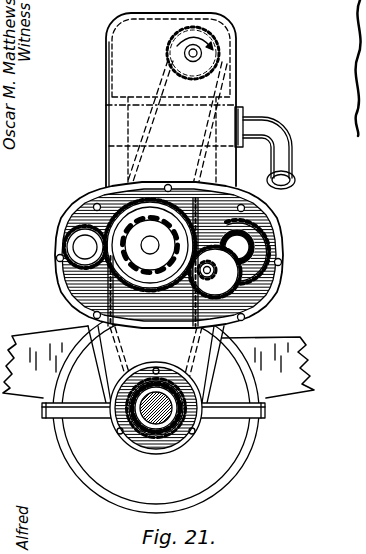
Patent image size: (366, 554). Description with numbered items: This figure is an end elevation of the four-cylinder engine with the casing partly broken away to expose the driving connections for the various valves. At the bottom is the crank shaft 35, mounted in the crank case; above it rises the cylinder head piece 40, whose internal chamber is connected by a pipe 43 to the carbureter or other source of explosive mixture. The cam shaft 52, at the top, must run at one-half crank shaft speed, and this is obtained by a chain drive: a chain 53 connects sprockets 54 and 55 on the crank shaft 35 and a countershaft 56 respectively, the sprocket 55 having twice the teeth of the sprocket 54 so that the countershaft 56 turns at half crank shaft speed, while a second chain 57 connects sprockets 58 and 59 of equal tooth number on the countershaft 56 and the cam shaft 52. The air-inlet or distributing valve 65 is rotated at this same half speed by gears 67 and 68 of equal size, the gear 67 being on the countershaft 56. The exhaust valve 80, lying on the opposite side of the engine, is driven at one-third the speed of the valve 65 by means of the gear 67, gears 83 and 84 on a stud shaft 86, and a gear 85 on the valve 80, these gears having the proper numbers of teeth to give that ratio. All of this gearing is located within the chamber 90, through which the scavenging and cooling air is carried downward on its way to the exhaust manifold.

The crank shaft 35 is at (133, 434).
The cylinder head piece 40 is at (110, 128).
The pipe 43 is at (296, 180).
The cam shaft 52 is at (189, 52).
The chain 53 is at (196, 399).
The sprocket 54 is at (175, 436).
The sprocket 55 is at (96, 205).
The countershaft 56 is at (150, 245).
The chain 57 is at (148, 133).
The sprocket 58 is at (200, 206).
The sprocket 59 is at (214, 62).
The air-inlet or distributing valve 65 is at (90, 246).
The gear 67 is at (155, 228).
The gear 68 is at (100, 226).
The exhaust valve 80 is at (271, 228).
The gear 83 is at (215, 272).
The gear 84 is at (215, 272).
The gear 85 is at (258, 234).
The stud shaft 86 is at (212, 265).
The chamber 90 is at (284, 286).